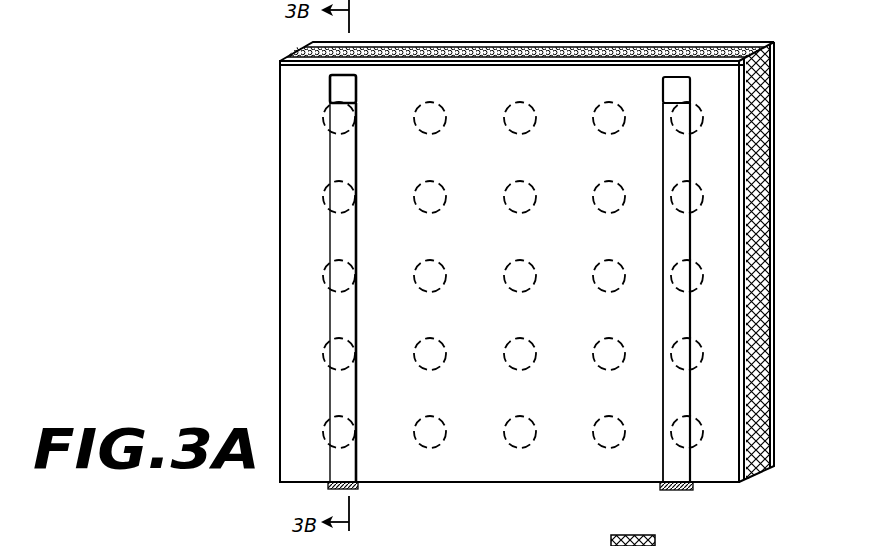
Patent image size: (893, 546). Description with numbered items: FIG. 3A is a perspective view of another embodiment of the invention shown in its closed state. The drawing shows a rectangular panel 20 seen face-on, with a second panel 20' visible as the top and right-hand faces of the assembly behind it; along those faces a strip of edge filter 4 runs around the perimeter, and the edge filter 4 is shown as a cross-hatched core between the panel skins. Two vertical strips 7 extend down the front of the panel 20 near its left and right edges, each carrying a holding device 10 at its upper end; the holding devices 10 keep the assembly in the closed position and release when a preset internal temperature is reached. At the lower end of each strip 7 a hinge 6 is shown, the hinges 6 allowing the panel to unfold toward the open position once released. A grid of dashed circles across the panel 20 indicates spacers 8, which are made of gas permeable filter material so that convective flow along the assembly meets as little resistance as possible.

The front panel 20 is at (512, 288).
The top/side panel 20' is at (554, 262).
The edge filter 4 is at (768, 430).
The strip 7 is at (338, 228).
The holding device 10 is at (343, 90).
The hinge 6 is at (335, 488).
The spacer 8 is at (521, 438).